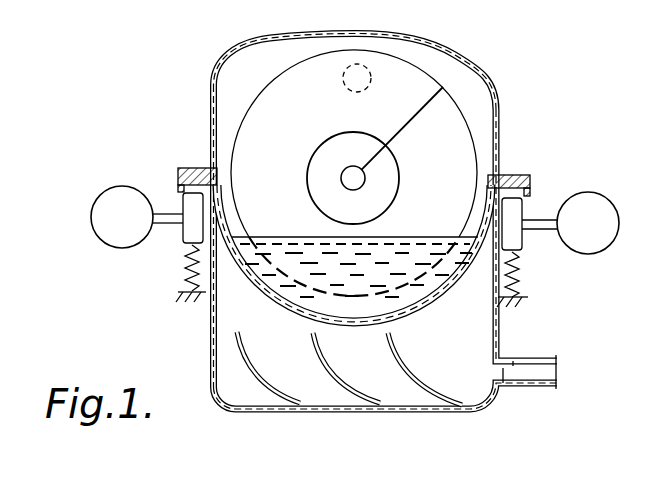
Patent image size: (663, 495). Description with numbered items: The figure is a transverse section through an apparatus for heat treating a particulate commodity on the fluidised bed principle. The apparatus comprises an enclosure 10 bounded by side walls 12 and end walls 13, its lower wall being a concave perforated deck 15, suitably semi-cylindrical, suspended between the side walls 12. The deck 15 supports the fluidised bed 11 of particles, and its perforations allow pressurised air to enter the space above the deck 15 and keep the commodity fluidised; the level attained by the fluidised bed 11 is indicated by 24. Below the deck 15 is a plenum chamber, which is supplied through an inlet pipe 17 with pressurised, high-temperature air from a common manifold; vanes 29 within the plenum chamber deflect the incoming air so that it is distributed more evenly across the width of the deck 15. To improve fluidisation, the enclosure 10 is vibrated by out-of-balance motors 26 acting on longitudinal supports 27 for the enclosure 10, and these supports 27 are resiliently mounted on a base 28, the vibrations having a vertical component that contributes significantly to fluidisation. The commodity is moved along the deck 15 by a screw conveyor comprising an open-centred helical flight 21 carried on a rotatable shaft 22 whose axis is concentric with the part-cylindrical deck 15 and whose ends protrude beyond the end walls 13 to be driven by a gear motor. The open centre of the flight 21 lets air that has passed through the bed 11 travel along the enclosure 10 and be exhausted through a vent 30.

The enclosure 10 is at (462, 51).
The fluidised bed 11 is at (416, 265).
The side walls 12 is at (210, 132).
The end walls 13 is at (280, 58).
The concave perforated deck 15 is at (282, 303).
The inlet pipe 17 is at (503, 385).
The helical flight 21 is at (301, 142).
The rotatable shaft 22 is at (366, 181).
The level of the fluidised bed 24 is at (432, 241).
The out-of-balance motors 26 is at (105, 228).
The longitudinal supports 27 is at (190, 227).
The base 28 is at (190, 306).
The vanes 29 is at (275, 390).
The vent 30 is at (355, 66).